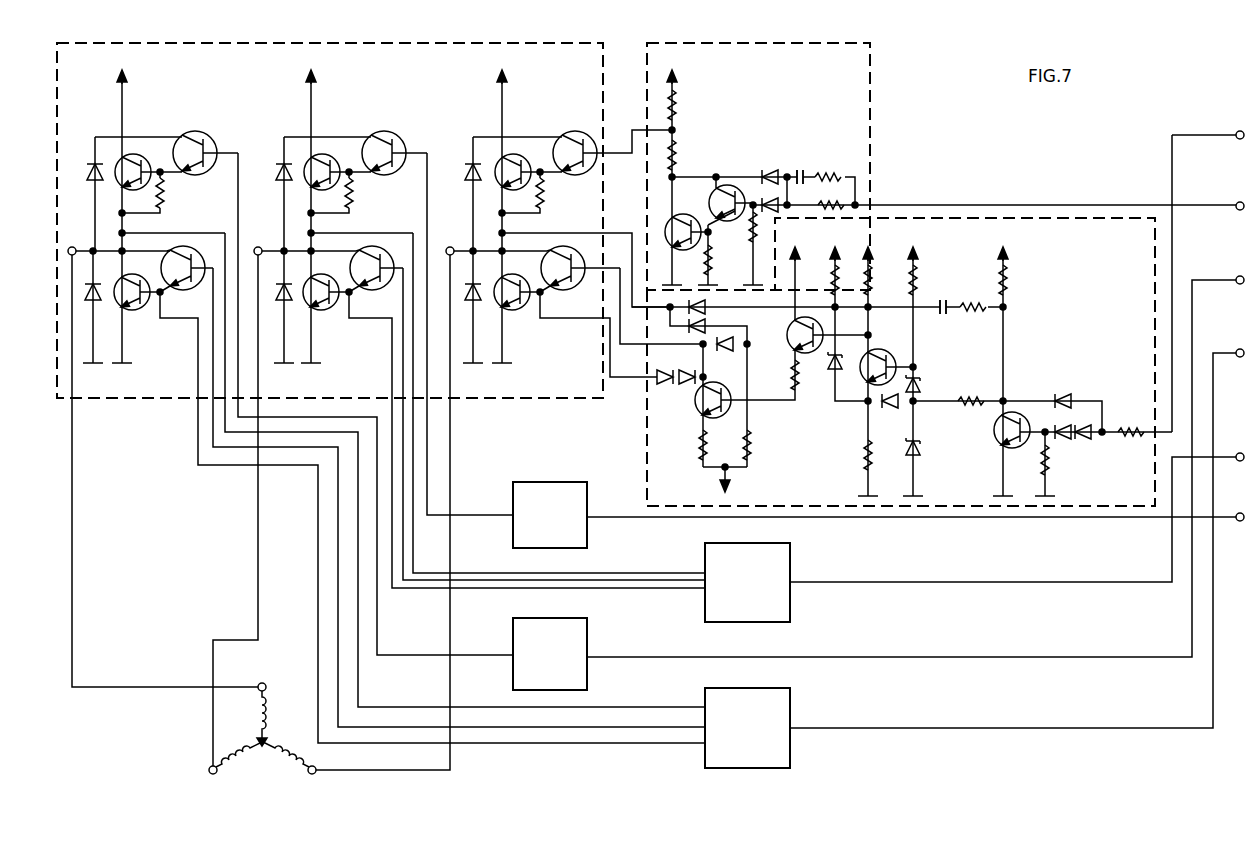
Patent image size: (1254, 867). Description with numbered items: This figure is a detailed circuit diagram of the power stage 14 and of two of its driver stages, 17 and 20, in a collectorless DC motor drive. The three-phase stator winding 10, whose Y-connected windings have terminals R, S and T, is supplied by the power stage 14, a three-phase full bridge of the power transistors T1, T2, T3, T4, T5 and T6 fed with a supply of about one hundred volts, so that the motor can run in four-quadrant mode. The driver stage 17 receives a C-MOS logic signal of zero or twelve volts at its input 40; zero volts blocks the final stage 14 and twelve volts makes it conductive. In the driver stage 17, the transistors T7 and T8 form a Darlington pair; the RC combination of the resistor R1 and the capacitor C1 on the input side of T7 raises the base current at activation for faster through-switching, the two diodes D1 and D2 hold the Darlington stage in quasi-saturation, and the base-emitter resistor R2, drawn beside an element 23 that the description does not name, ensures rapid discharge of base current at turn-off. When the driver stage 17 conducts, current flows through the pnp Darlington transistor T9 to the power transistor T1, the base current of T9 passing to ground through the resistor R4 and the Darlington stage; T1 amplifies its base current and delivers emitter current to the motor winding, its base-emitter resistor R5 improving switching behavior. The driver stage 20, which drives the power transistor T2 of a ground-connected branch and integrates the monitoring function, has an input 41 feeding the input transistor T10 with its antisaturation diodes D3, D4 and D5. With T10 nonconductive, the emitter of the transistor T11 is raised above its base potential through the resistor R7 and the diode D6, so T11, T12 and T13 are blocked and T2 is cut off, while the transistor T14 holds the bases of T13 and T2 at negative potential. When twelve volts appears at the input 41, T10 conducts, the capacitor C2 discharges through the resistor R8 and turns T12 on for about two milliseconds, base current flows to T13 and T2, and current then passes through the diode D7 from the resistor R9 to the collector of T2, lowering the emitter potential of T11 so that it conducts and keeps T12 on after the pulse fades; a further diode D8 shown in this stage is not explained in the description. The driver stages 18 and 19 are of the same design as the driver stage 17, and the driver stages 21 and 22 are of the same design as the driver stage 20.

The stator winding 10 is at (180, 722).
The power stage 14 is at (157, 380).
The driver stage 17 is at (848, 82).
The driver stage 18 is at (545, 496).
The driver stage 19 is at (520, 632).
The driver stage 20 is at (1060, 218).
The driver stage 21 is at (780, 558).
The driver stage 22 is at (780, 705).
The resistor 23 is at (699, 262).
The input 40 is at (1224, 198).
The input 41 is at (1224, 126).
The power transistor T1 is at (513, 158).
The power transistor T2 is at (513, 306).
The power transistor T3 is at (322, 158).
The power transistor T4 is at (323, 306).
The power transistor T5 is at (133, 158).
The power transistor T6 is at (133, 306).
The transistor T7 is at (724, 166).
The transistor T8 is at (666, 224).
The pnp Darlington transistor T9 is at (575, 131).
The input transistor T10 is at (996, 432).
The transistor T11 is at (867, 380).
The transistor T12 is at (797, 346).
The transistor T13 is at (562, 292).
The transistor T14 is at (698, 402).
The diode D1 is at (771, 168).
The diode D2 is at (770, 216).
The antisaturation diode D3 is at (1063, 394).
The antisaturation diode D4 is at (1083, 440).
The antisaturation diode D5 is at (1063, 440).
The diode D6 is at (892, 410).
The diode D7 is at (705, 311).
The zener diode D8 is at (920, 450).
The resistor R1 is at (832, 168).
The base-emitter resistor R2 is at (752, 244).
The resistor R4 is at (676, 124).
The base-emitter resistor R5 is at (544, 198).
The resistor R7 is at (966, 398).
The resistor R8 is at (974, 314).
The resistor R9 is at (834, 280).
The capacitor C1 is at (800, 168).
The capacitor C2 is at (944, 316).